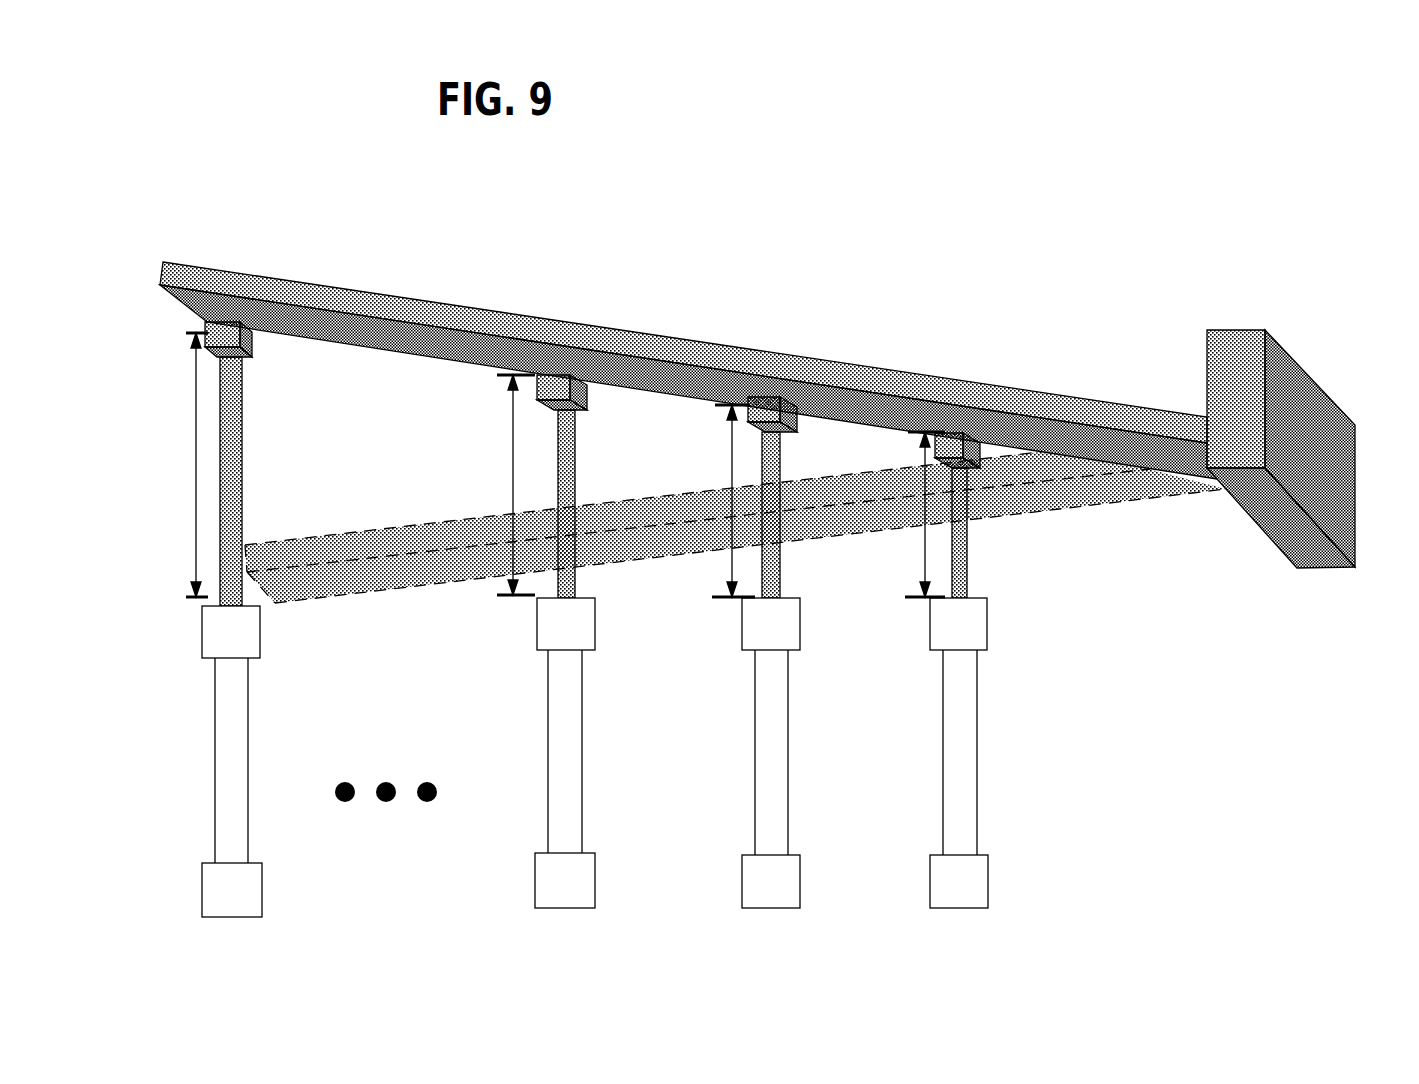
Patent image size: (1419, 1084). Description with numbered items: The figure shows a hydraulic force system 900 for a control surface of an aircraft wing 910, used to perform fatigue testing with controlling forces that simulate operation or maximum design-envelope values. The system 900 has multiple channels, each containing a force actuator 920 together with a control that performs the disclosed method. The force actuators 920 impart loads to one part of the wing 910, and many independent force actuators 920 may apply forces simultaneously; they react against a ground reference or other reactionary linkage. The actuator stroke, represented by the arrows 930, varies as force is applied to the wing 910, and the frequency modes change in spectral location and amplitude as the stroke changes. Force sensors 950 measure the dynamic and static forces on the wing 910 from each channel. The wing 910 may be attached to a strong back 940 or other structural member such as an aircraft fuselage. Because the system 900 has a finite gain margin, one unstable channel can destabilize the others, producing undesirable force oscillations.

The hydraulic force system 900 is at (946, 215).
The aircraft wing 910 is at (688, 370).
The force actuator 920 is at (635, 637).
The actuator stroke 930 is at (196, 485).
The strong back 940 is at (1281, 423).
The force sensor 950 is at (634, 441).